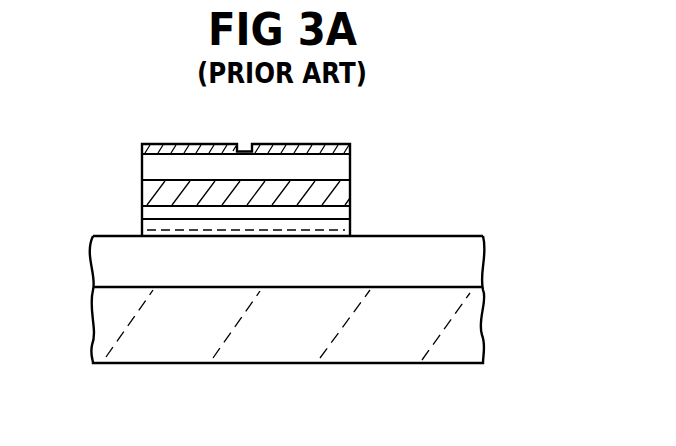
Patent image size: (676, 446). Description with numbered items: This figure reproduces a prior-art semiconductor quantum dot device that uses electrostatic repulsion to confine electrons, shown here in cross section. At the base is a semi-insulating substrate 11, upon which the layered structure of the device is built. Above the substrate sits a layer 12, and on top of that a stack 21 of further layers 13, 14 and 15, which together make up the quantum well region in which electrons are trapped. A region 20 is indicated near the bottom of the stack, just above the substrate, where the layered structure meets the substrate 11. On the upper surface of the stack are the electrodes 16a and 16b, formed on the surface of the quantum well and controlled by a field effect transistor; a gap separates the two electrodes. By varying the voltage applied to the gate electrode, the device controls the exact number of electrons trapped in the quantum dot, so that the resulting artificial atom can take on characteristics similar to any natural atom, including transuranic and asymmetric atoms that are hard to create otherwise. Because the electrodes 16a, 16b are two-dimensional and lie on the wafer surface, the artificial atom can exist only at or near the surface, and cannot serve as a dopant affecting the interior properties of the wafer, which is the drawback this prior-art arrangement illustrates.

The semi-insulating substrate 11 is at (463, 342).
The buffer layer 12 is at (457, 273).
The first semiconductor layer 13 is at (338, 215).
The active layer 14 is at (345, 192).
The second semiconductor layer 15 is at (327, 168).
The electrode 16a is at (145, 159).
The electrode 16b is at (280, 145).
The channel region 20 is at (327, 232).
The semiconductor laminate 21 is at (441, 153).